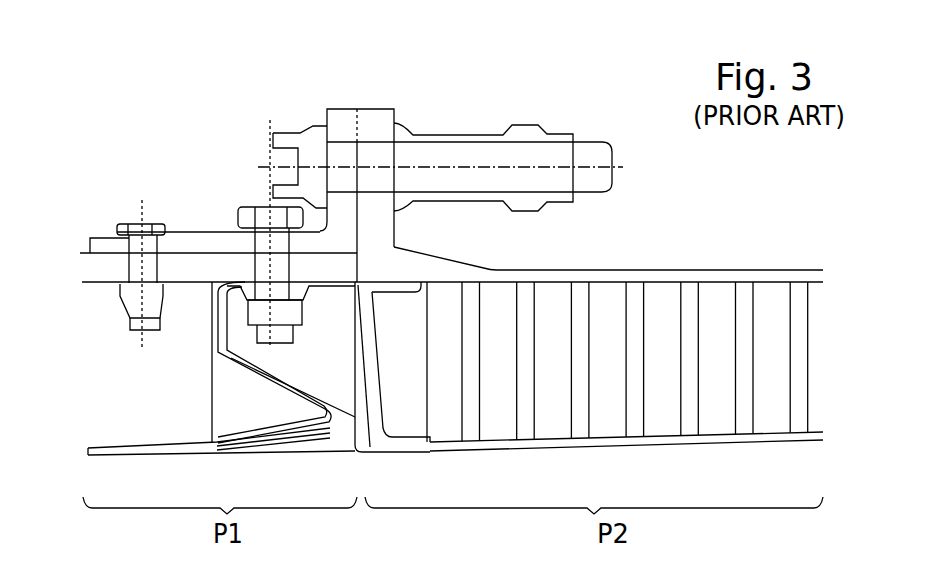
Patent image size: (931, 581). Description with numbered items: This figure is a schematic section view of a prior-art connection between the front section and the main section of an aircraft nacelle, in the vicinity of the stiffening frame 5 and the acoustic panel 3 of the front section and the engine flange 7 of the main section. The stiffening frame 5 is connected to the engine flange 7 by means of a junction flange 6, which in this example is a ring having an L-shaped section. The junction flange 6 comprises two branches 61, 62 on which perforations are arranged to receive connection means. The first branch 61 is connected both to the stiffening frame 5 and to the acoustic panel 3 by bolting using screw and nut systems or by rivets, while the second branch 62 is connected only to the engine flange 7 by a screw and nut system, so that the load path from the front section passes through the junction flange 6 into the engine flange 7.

The acoustic panel 3 is at (158, 408).
The stiffening frame 5 is at (98, 288).
The junction flange 6 is at (312, 108).
The engine flange 7 is at (423, 268).
The first branch 61 is at (132, 250).
The second branch 62 is at (349, 212).